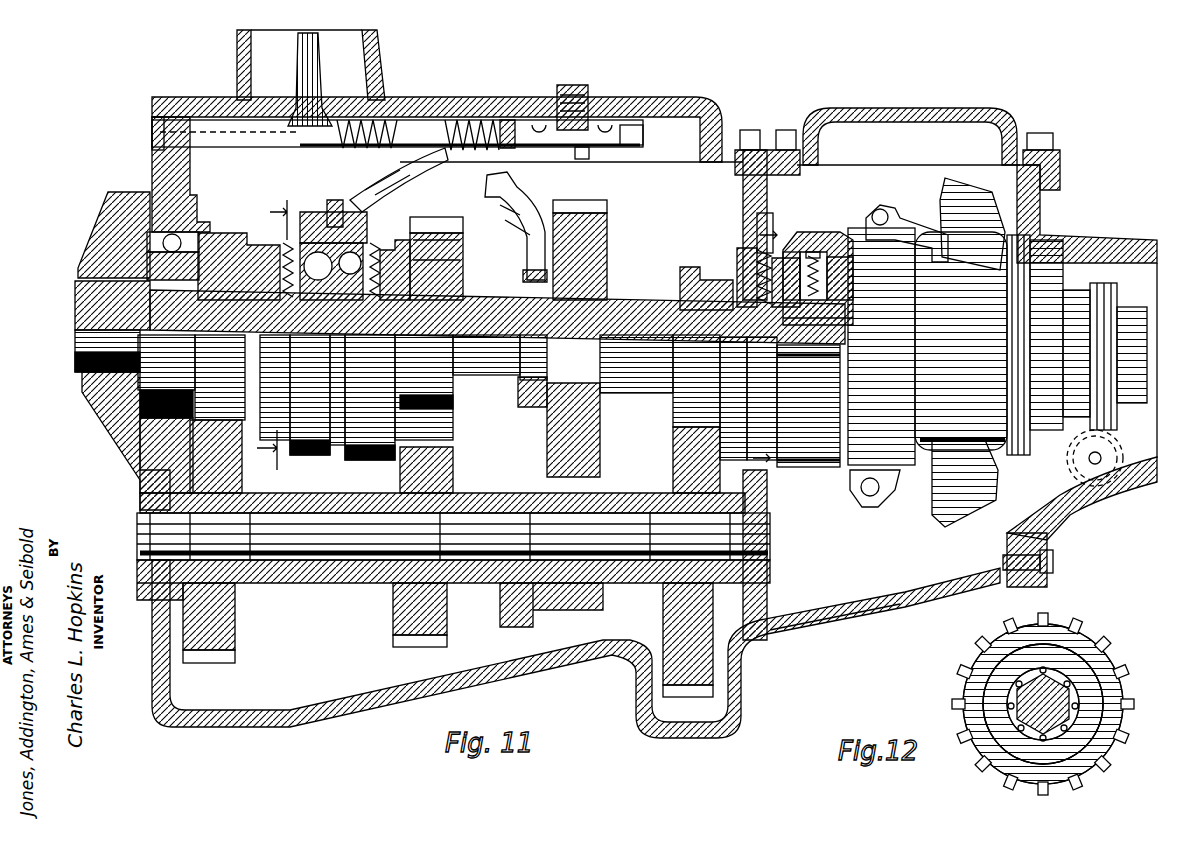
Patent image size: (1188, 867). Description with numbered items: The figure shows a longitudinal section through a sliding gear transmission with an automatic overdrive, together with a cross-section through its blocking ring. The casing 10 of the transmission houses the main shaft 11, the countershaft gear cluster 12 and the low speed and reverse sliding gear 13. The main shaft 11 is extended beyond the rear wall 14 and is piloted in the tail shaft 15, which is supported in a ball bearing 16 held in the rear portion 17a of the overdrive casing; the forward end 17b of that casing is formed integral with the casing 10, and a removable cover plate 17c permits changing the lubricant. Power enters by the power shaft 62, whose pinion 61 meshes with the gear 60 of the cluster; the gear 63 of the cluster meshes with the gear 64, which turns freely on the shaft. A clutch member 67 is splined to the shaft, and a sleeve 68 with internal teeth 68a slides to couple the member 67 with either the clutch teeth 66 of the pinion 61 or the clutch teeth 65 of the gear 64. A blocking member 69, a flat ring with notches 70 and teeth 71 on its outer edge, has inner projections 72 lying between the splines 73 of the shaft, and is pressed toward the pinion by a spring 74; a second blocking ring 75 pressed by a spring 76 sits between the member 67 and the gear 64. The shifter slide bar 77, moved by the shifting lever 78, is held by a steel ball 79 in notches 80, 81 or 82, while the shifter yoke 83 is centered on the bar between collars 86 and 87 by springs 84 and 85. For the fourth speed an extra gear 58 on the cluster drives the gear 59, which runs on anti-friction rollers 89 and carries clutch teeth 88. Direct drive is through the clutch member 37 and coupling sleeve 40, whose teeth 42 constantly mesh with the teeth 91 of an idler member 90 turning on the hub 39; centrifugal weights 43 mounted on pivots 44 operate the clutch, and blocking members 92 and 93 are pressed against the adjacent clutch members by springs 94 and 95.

In FIG. 11, the casing 10 is at (262, 710).
In FIG. 11, the main shaft 11 is at (480, 300).
In FIG. 11, the countershaft gear cluster 12 is at (335, 600).
In FIG. 11, the low speed and reverse sliding gear 13 is at (607, 238).
In FIG. 11, the rear wall 14 is at (740, 196).
In FIG. 11, the tail shaft 15 is at (1123, 327).
In FIG. 11, the ball bearing 16 is at (1050, 283).
In FIG. 11, the rear portion of overdrive casing 17a is at (1073, 233).
In FIG. 11, the forward end of overdrive casing 17b is at (855, 625).
In FIG. 11, the removable cover plate 17c is at (913, 112).
In FIG. 11, the clutch member 37 is at (830, 297).
In FIG. 11, the hub 39 is at (840, 323).
In FIG. 11, the coupling sleeve 40 is at (833, 473).
In FIG. 11, the teeth of coupling sleeve 42 is at (820, 233).
In FIG. 11, the centrifugal weights 43 is at (957, 200).
In FIG. 11, the lever pivot 44 is at (887, 213).
In FIG. 11, the extra gear 58 is at (683, 442).
In FIG. 11, the gear 59 is at (680, 290).
In FIG. 11, the gear 60 is at (230, 627).
In FIG. 11, the pinion 61 is at (227, 240).
In FIG. 11, the power shaft 62 is at (78, 288).
In FIG. 11, the gear 63 is at (443, 470).
In FIG. 11, the gear 64 is at (463, 238).
In FIG. 11, the clutch teeth 65 is at (385, 244).
In FIG. 11, the clutch teeth 66 is at (272, 240).
In FIG. 11, the clutch member 67 is at (350, 228).
In FIG. 11, the sleeve 68 is at (327, 445).
In FIG. 11, the internal teeth 68a is at (303, 228).
In FIG. 11, the blocking member 69 is at (268, 282).
In FIG. 12, the blocking member 69 is at (1000, 698).
In FIG. 12, the notches 70 is at (1125, 662).
In FIG. 12, the teeth 71 is at (1063, 624).
In FIG. 12, the projections 72 is at (1013, 676).
In FIG. 12, the splines 73 is at (1122, 702).
In FIG. 11, the spring 74 is at (262, 238).
In FIG. 11, the blocking ring 75 is at (453, 252).
In FIG. 11, the spring 76 is at (425, 222).
In FIG. 11, the shifter slide bar 77 is at (273, 145).
In FIG. 11, the shifting lever 78 is at (312, 90).
In FIG. 11, the spring-pressed steel ball 79 is at (591, 118).
In FIG. 11, the notch 80 is at (542, 118).
In FIG. 11, the notch 81 is at (580, 152).
In FIG. 11, the notch 82 is at (613, 123).
In FIG. 11, the shifter yoke 83 is at (377, 181).
In FIG. 11, the spring 84 is at (388, 96).
In FIG. 11, the spring 85 is at (481, 118).
In FIG. 11, the collar 86 is at (334, 120).
In FIG. 11, the collar 87 is at (512, 118).
In FIG. 11, the clutch teeth 88 is at (737, 250).
In FIG. 11, the anti-friction rollers 89 is at (693, 277).
In FIG. 11, the idler member 90 is at (782, 250).
In FIG. 11, the teeth 91 is at (775, 363).
In FIG. 11, the blocking member 92 is at (750, 273).
In FIG. 11, the blocking member 93 is at (830, 285).
In FIG. 11, the spring 94 is at (767, 455).
In FIG. 11, the spring 95 is at (827, 275).